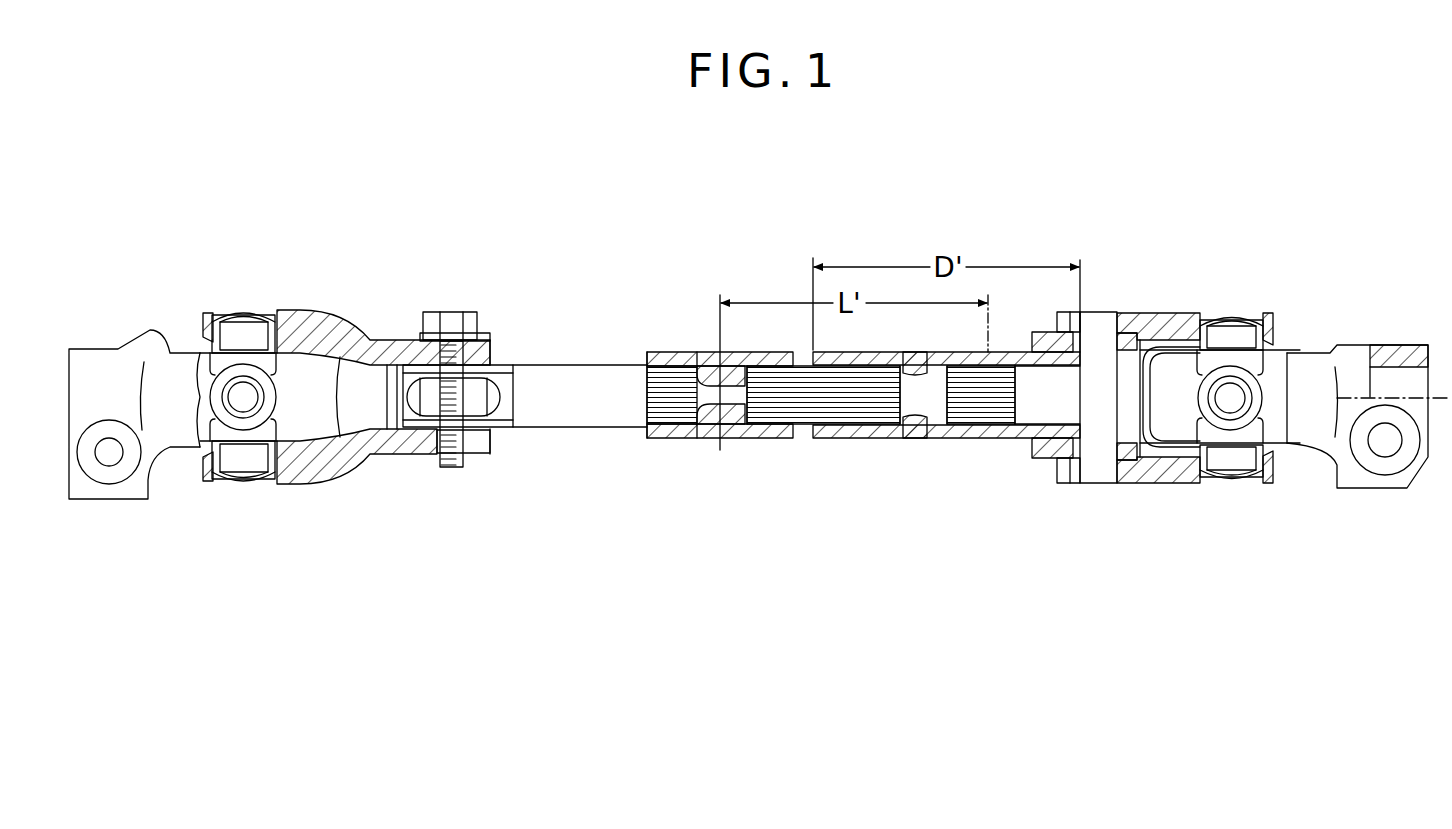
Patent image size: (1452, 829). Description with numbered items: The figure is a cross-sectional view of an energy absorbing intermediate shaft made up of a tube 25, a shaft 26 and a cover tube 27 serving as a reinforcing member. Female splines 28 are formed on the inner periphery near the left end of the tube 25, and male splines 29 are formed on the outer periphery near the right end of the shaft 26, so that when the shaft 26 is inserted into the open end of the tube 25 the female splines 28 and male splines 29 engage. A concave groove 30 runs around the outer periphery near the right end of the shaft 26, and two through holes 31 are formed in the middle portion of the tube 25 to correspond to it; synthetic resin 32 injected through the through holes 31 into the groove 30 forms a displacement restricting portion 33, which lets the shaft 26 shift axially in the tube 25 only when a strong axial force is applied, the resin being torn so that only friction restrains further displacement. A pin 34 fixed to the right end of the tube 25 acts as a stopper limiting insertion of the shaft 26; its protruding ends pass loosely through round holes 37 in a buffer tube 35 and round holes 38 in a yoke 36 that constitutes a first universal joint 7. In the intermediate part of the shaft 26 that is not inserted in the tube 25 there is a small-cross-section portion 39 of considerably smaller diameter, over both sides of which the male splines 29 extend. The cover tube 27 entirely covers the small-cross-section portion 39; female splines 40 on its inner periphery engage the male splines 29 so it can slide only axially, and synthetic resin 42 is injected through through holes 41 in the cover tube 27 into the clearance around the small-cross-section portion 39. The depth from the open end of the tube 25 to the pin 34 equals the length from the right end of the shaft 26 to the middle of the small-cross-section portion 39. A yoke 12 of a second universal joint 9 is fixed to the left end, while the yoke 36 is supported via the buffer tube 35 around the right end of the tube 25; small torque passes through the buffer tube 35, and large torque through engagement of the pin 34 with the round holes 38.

The first universal joint 7 is at (1279, 310).
The second universal joint 9 is at (291, 298).
The yoke 12 is at (340, 327).
The tube 25 is at (829, 348).
The shaft 26 is at (575, 360).
The cover tube 27 is at (766, 450).
The female splines 28 is at (841, 412).
The male splines 29 is at (867, 382).
The concave groove 30 is at (903, 413).
The through holes 31 is at (914, 362).
The synthetic resin 32 is at (943, 353).
The displacement restricting portion 33 is at (978, 445).
The pin 34 is at (1105, 390).
The buffer tube 35 is at (1043, 330).
The yoke 36 is at (1167, 483).
The round holes 37 is at (1110, 345).
The round holes 38 is at (1120, 335).
The small-cross-section portion 39 is at (712, 398).
The female splines 40 is at (663, 415).
The through holes 41 is at (718, 364).
The synthetic resin 42 is at (698, 352).